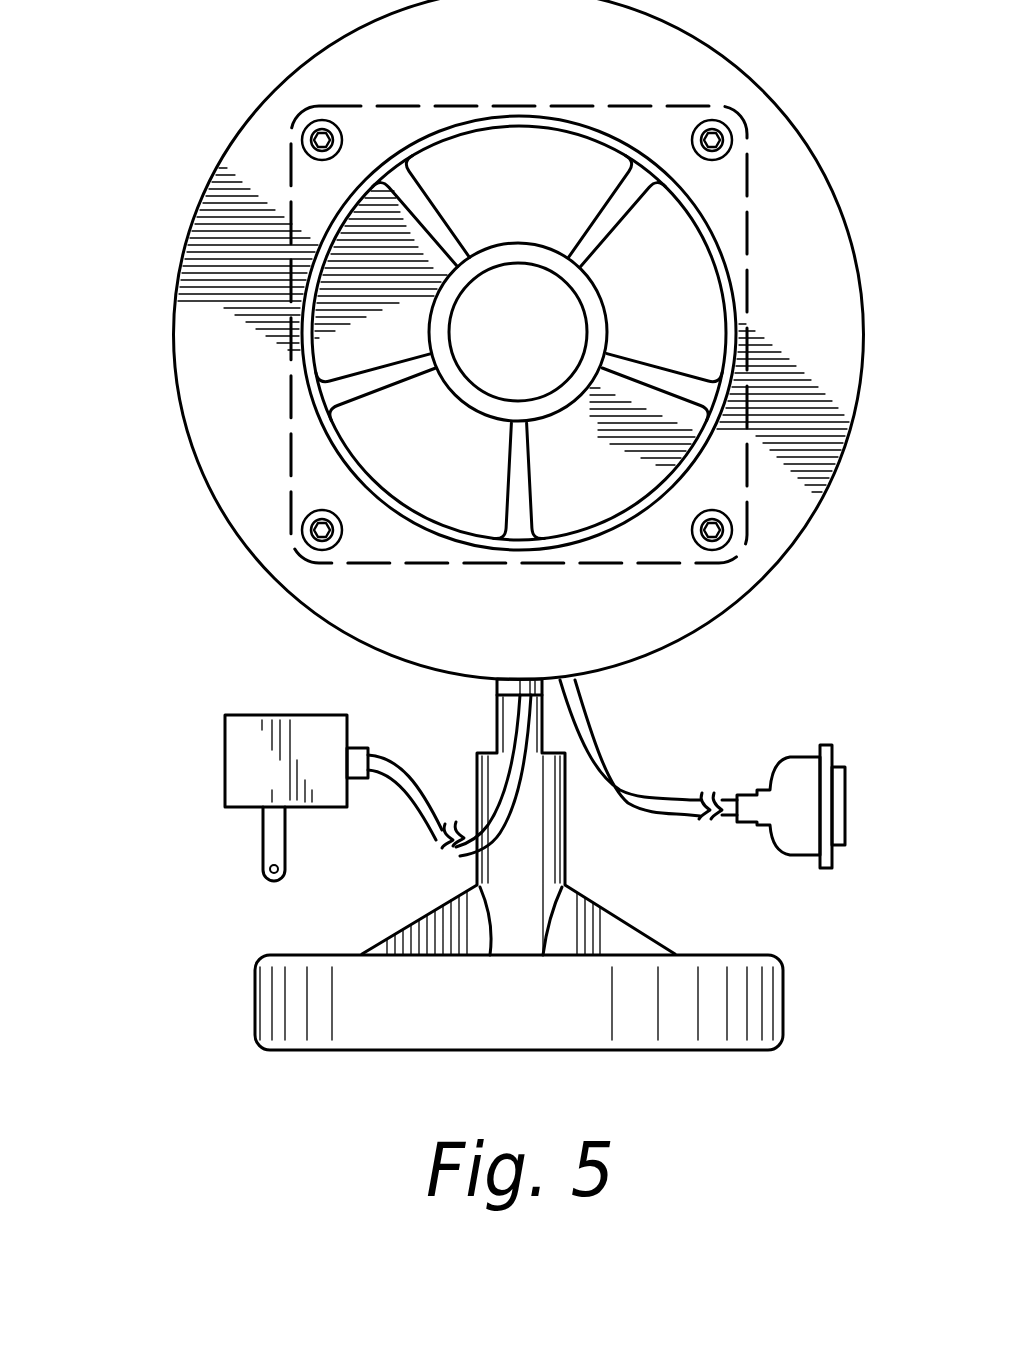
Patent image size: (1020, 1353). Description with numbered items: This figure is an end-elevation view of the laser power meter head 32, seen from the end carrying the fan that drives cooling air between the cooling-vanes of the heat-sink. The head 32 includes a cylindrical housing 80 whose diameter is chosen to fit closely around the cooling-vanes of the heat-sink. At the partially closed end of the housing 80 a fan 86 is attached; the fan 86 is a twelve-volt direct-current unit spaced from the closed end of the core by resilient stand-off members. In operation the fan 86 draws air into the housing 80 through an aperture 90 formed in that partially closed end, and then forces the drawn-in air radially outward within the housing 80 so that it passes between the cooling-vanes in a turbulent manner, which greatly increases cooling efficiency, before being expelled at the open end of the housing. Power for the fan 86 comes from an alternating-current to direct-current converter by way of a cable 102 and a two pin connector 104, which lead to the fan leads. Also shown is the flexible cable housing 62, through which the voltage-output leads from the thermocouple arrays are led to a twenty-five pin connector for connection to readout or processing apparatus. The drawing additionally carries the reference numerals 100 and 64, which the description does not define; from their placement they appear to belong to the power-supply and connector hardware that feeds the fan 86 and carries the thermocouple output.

The laser power meter head 32 is at (142, 468).
The cylindrical housing 80 is at (806, 545).
The fan 86 is at (400, 172).
The aperture 90 is at (598, 130).
The power transformer 100 is at (235, 733).
The cable 102 is at (432, 800).
The two pin connector 104 is at (514, 690).
The flexible cable housing 62 is at (606, 780).
The plug 64 is at (788, 826).